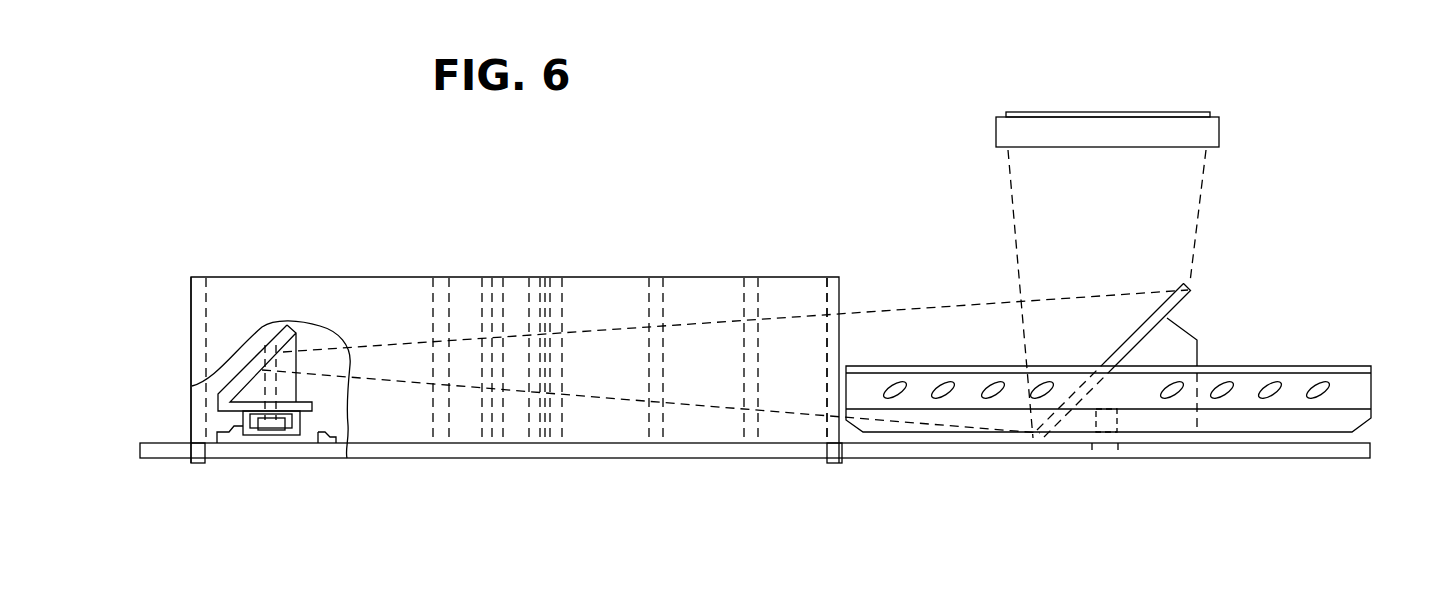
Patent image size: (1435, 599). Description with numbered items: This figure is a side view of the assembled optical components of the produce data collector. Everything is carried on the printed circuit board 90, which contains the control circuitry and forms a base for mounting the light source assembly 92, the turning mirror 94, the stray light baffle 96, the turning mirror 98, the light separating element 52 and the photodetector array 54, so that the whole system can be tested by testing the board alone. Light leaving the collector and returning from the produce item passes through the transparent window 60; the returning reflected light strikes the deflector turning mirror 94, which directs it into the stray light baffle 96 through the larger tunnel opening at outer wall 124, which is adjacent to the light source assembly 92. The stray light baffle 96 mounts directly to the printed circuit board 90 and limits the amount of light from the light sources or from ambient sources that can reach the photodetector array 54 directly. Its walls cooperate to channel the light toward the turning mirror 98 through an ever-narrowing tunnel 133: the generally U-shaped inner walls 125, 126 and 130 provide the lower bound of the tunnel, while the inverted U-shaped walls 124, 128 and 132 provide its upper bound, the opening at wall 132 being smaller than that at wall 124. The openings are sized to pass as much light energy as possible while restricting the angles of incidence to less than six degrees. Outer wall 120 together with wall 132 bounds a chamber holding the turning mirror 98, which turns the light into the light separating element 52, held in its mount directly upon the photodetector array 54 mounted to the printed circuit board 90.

The transparent window 60 is at (1160, 112).
The turning mirror 94 is at (1192, 290).
The light source assembly 92 is at (1365, 400).
The printed circuit board 90 is at (998, 458).
The turning mirror 98 is at (242, 373).
The outer wall 120 is at (195, 432).
The photodetector array 54 is at (248, 435).
The light separating element 52 is at (277, 417).
The inner wall 132 is at (318, 416).
The inner wall 130 is at (440, 432).
The inner wall 128 is at (557, 440).
The inner wall 126 is at (655, 440).
The inner wall 125 is at (753, 440).
The outer wall 124 is at (833, 440).
The stray light baffle 96 is at (603, 432).
The tunnel 133 is at (697, 392).